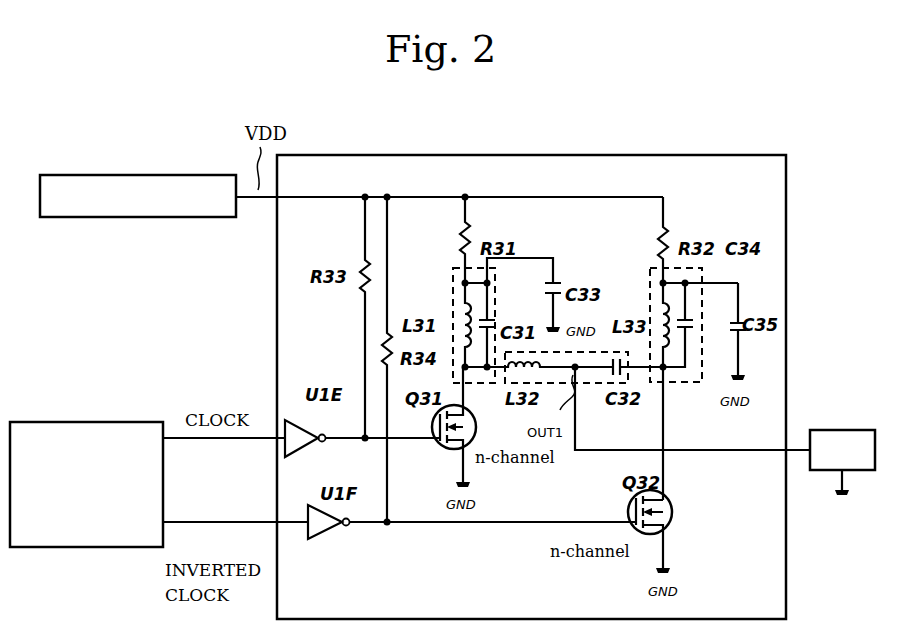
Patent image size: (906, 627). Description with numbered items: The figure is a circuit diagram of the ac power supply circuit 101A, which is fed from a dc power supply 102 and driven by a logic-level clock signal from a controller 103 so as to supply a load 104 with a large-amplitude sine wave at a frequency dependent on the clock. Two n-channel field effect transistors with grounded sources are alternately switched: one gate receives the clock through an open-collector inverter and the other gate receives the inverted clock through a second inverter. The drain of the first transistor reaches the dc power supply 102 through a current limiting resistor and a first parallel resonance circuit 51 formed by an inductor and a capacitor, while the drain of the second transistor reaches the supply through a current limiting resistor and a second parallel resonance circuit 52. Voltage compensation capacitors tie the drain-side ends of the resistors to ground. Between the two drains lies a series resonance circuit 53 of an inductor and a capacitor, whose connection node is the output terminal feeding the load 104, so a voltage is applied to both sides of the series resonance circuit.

The ac power supply circuit 101A is at (695, 154).
The dc power supply 102 is at (165, 174).
The controller 103 is at (108, 421).
The load 104 is at (835, 430).
The first parallel resonance circuit 51 is at (453, 280).
The second parallel resonance circuit 52 is at (683, 385).
The series resonance circuit 53 is at (585, 384).